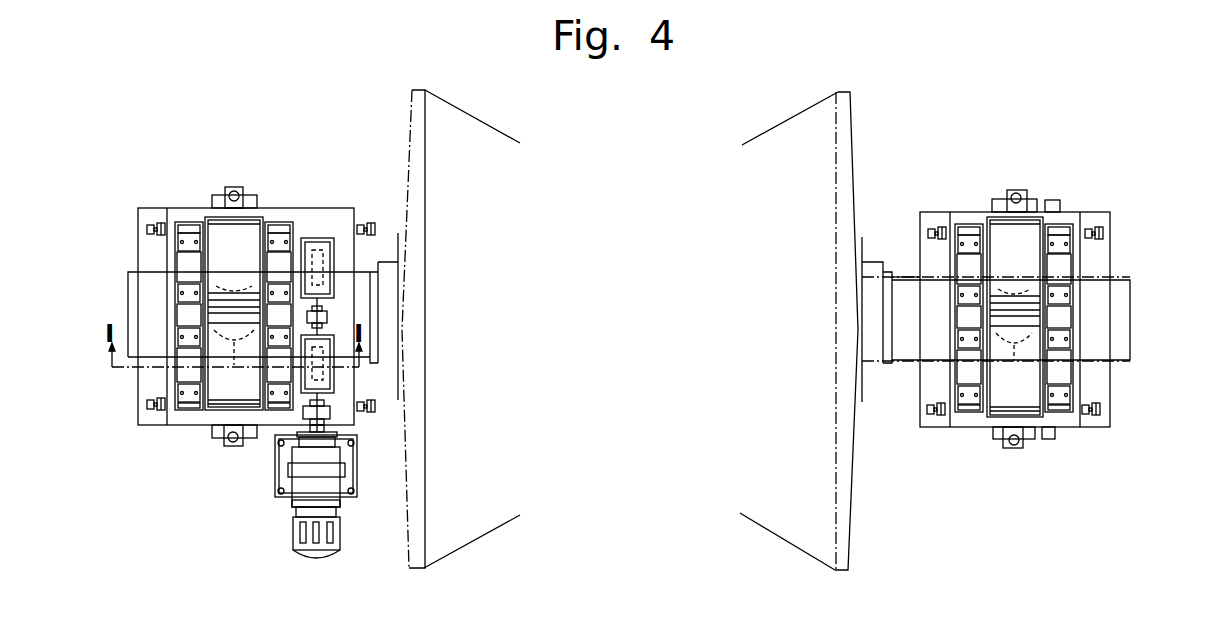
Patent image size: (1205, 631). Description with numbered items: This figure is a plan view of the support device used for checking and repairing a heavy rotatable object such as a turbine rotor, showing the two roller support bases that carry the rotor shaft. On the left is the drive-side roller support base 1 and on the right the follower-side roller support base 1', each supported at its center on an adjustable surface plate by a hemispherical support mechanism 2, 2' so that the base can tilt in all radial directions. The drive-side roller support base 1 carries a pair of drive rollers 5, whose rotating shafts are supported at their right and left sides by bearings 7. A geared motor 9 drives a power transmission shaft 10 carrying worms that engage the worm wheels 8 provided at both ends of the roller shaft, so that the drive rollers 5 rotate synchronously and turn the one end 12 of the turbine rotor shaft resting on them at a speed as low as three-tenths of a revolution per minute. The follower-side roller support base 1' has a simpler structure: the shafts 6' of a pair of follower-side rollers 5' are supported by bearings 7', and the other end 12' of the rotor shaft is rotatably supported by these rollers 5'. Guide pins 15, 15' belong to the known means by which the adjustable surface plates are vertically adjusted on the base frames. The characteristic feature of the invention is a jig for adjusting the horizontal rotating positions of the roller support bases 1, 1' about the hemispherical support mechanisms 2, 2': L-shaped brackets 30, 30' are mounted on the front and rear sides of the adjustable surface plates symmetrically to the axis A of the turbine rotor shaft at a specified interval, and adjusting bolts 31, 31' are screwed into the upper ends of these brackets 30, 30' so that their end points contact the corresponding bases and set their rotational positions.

The drive-side roller support base 1 is at (246, 272).
The hemispherical support mechanism 2 is at (234, 313).
The drive roller 5 is at (242, 309).
The bearing 7 is at (220, 316).
The worm wheel 8 is at (318, 265).
The geared motor 9 is at (303, 493).
The power transmission shaft 10 is at (325, 403).
The end of the shaft of the turbine rotor 12 is at (225, 314).
The guide pin 15 is at (218, 331).
The L-shaped bracket 30 is at (274, 313).
The adjusting bolt 31 is at (232, 309).
The axis of the shaft of the turbine rotor A is at (772, 133).
The follower-side roller support base 1' is at (1015, 278).
The hemispherical support mechanism 2' is at (1015, 317).
The follower-side roller 5' is at (1005, 326).
The shaft of follower-side roller 6' is at (1036, 301).
The bearing 7' is at (1025, 318).
The end of the shaft of the turbine rotor 12' is at (1023, 319).
The guide pin 15' is at (1032, 321).
The L-shaped bracket 30' is at (1026, 327).
The adjusting bolt 31' is at (1032, 327).